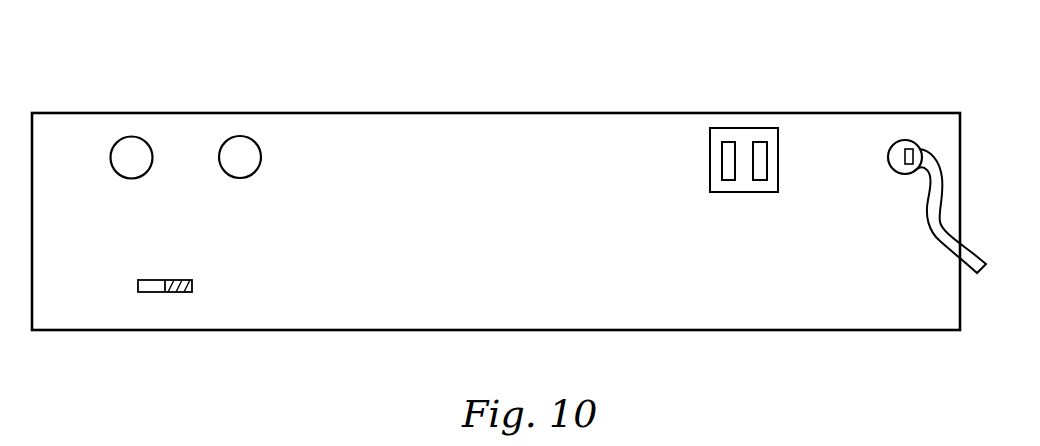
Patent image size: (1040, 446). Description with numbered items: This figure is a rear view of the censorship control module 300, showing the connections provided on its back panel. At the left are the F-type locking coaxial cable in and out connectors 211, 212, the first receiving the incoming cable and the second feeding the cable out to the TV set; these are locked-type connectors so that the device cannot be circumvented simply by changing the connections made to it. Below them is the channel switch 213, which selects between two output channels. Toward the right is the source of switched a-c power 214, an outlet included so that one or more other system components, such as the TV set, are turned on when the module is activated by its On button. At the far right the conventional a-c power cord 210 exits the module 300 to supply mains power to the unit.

The censorship control module 300 is at (810, 109).
The F-type locking coaxial cable in connector 211 is at (126, 153).
The F-type locking coaxial cable out connector 212 is at (242, 161).
The channel switch 213 is at (193, 286).
The source of switched a-c power 214 is at (717, 171).
The a-c power cord 210 is at (932, 220).